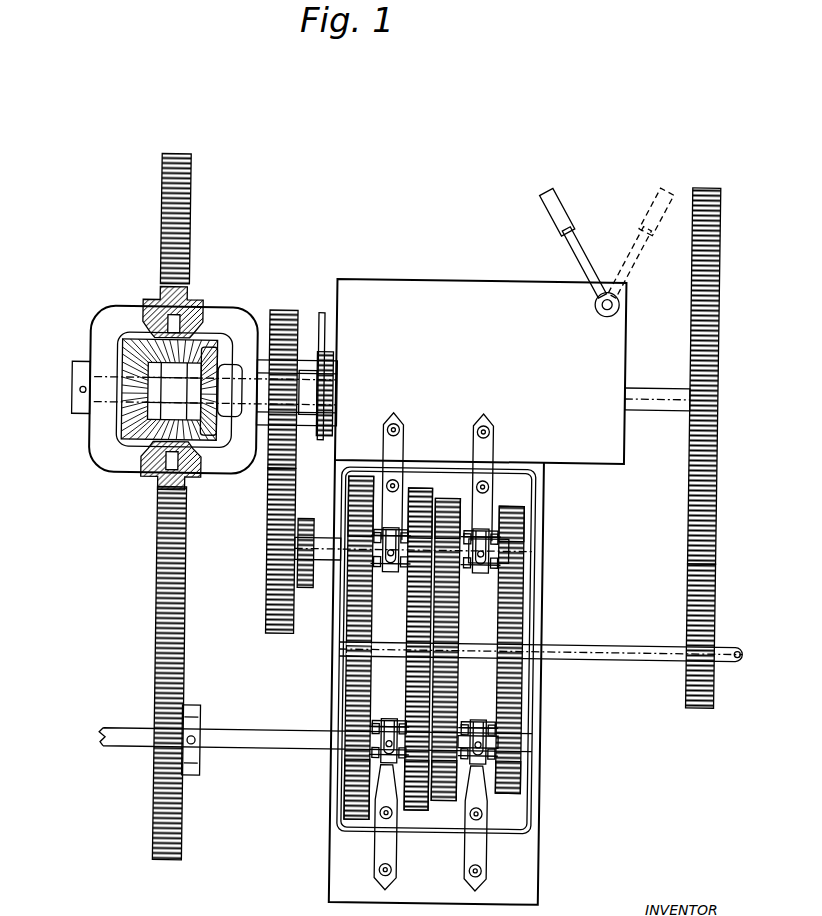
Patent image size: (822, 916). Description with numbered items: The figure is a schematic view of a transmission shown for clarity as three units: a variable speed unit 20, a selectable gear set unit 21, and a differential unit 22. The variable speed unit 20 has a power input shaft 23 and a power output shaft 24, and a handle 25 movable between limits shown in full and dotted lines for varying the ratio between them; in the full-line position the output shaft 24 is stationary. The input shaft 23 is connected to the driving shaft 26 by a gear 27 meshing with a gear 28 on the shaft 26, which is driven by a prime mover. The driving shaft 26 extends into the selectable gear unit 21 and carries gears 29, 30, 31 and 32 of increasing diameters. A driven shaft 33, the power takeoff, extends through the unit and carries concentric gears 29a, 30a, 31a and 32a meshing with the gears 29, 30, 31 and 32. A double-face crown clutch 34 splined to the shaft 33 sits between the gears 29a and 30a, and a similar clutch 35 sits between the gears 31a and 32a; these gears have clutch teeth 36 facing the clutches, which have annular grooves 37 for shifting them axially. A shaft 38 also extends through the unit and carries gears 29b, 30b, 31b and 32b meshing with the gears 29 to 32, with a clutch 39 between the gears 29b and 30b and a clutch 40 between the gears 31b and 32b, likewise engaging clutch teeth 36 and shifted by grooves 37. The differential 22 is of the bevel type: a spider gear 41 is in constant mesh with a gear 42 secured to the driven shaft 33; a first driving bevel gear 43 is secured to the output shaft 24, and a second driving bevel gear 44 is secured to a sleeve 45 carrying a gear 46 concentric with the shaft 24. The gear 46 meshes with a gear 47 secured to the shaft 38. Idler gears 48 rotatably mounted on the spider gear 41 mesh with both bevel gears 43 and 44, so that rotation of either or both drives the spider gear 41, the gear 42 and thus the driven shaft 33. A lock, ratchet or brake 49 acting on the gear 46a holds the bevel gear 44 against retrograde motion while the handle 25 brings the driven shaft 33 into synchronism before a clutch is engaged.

The variable speed unit 20 is at (400, 290).
The selectable gear set unit 21 is at (552, 742).
The differential unit 22 is at (92, 288).
The power input shaft 23 is at (655, 387).
The power output shaft 24 is at (162, 397).
The handle 25 is at (548, 219).
The driving shaft 26 is at (612, 644).
The gear 27 is at (689, 493).
The gear 28 is at (689, 619).
The gear 29 is at (356, 655).
The gear 29a is at (349, 791).
The gear 29b is at (358, 478).
The gear 30 is at (412, 636).
The gear 30a is at (414, 812).
The gear 30b is at (425, 490).
The gear 31 is at (462, 624).
The gear 31a is at (448, 800).
The gear 31b is at (452, 500).
The gear 32 is at (508, 664).
The gear 32a is at (522, 786).
The gear 32b is at (528, 512).
The driven shaft 33 is at (256, 737).
The clutch 34 is at (350, 724).
The clutch 35 is at (478, 734).
The clutch teeth 36 is at (505, 530).
The annular grooves 37 is at (560, 731).
The shaft 38 is at (320, 538).
The clutch 39 is at (372, 576).
The clutch 40 is at (505, 588).
The spider gear 41 is at (158, 566).
The gear 42 is at (156, 676).
The first driving bevel gear 43 is at (133, 363).
The second driving bevel gear 44 is at (220, 345).
The sleeve 45 is at (233, 423).
The gear 46 is at (286, 314).
The gear 46a is at (320, 437).
The gear 47 is at (268, 599).
The idler gears 48 is at (198, 340).
The brake 49 is at (320, 308).